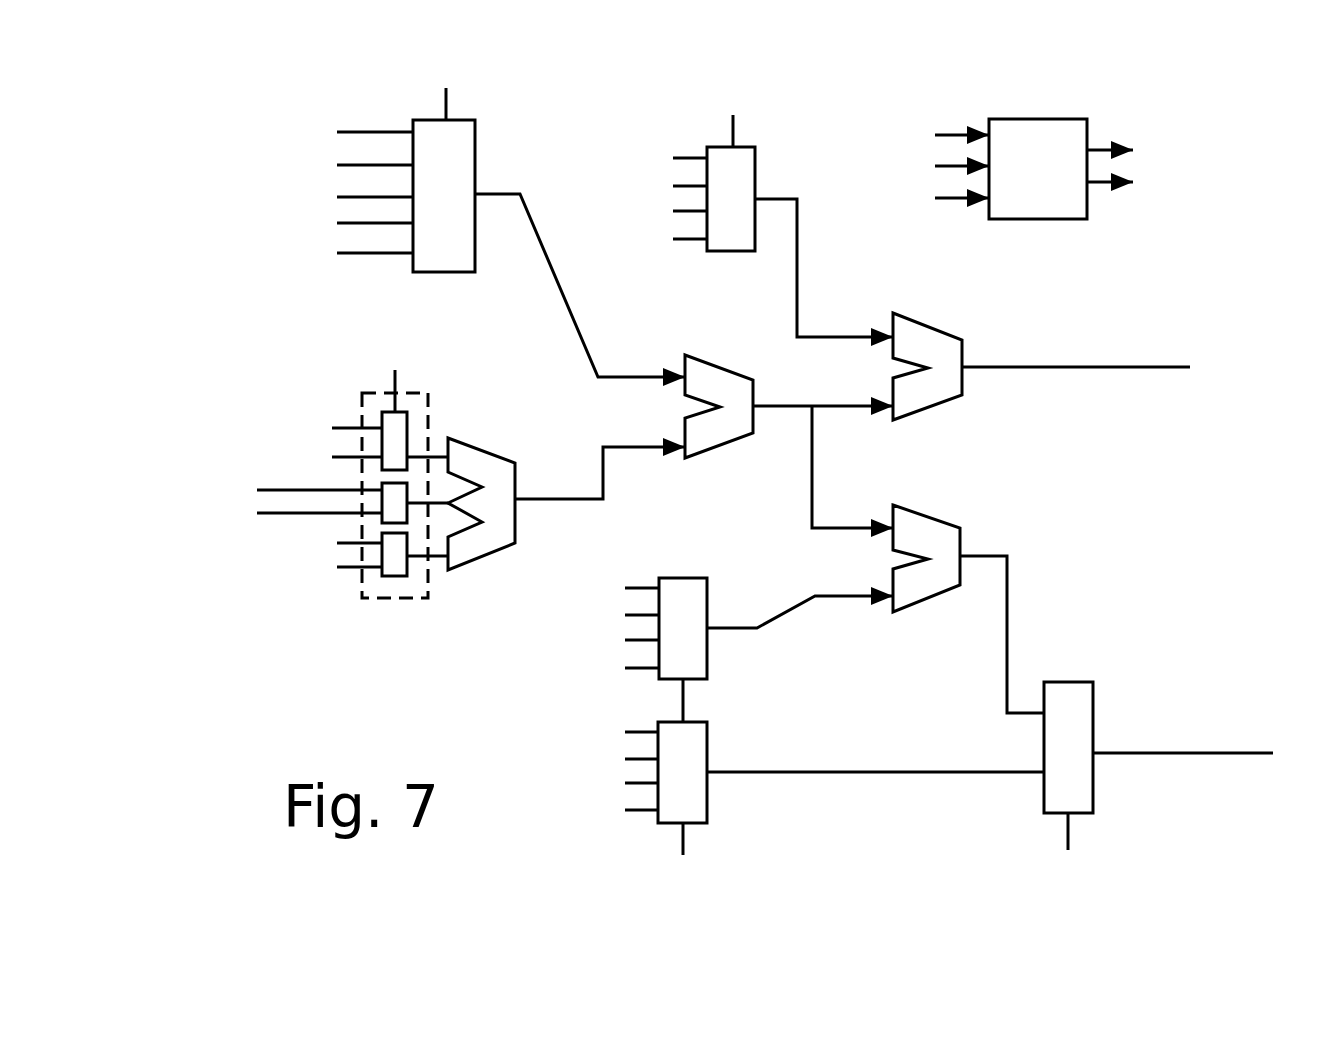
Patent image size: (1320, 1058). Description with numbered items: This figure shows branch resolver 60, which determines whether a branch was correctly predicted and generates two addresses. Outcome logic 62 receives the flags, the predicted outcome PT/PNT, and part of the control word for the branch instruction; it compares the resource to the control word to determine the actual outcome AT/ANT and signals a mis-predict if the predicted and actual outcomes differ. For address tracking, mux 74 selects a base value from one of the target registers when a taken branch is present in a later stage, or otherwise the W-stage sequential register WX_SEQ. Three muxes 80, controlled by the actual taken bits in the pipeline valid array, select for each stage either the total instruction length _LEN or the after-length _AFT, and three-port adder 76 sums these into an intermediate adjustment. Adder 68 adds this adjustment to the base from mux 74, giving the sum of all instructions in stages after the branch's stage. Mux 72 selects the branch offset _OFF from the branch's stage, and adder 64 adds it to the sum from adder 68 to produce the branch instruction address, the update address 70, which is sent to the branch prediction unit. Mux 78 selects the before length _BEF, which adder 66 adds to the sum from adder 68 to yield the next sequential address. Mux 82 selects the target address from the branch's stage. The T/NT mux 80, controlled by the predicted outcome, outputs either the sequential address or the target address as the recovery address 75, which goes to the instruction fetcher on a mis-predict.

The branch resolver 60 is at (1192, 549).
The outcome logic 62 is at (1027, 219).
The adder 64 is at (940, 400).
The adder 66 is at (958, 523).
The adder 68 is at (742, 370).
The update address 70 is at (1123, 367).
The mux 72 is at (707, 149).
The mux 74 is at (475, 168).
The recovery address 75 is at (1245, 753).
The three-port adder 76 is at (490, 452).
The before address multiplexer 78 is at (677, 578).
The mux 80 is at (415, 598).
The mux 82 is at (707, 752).